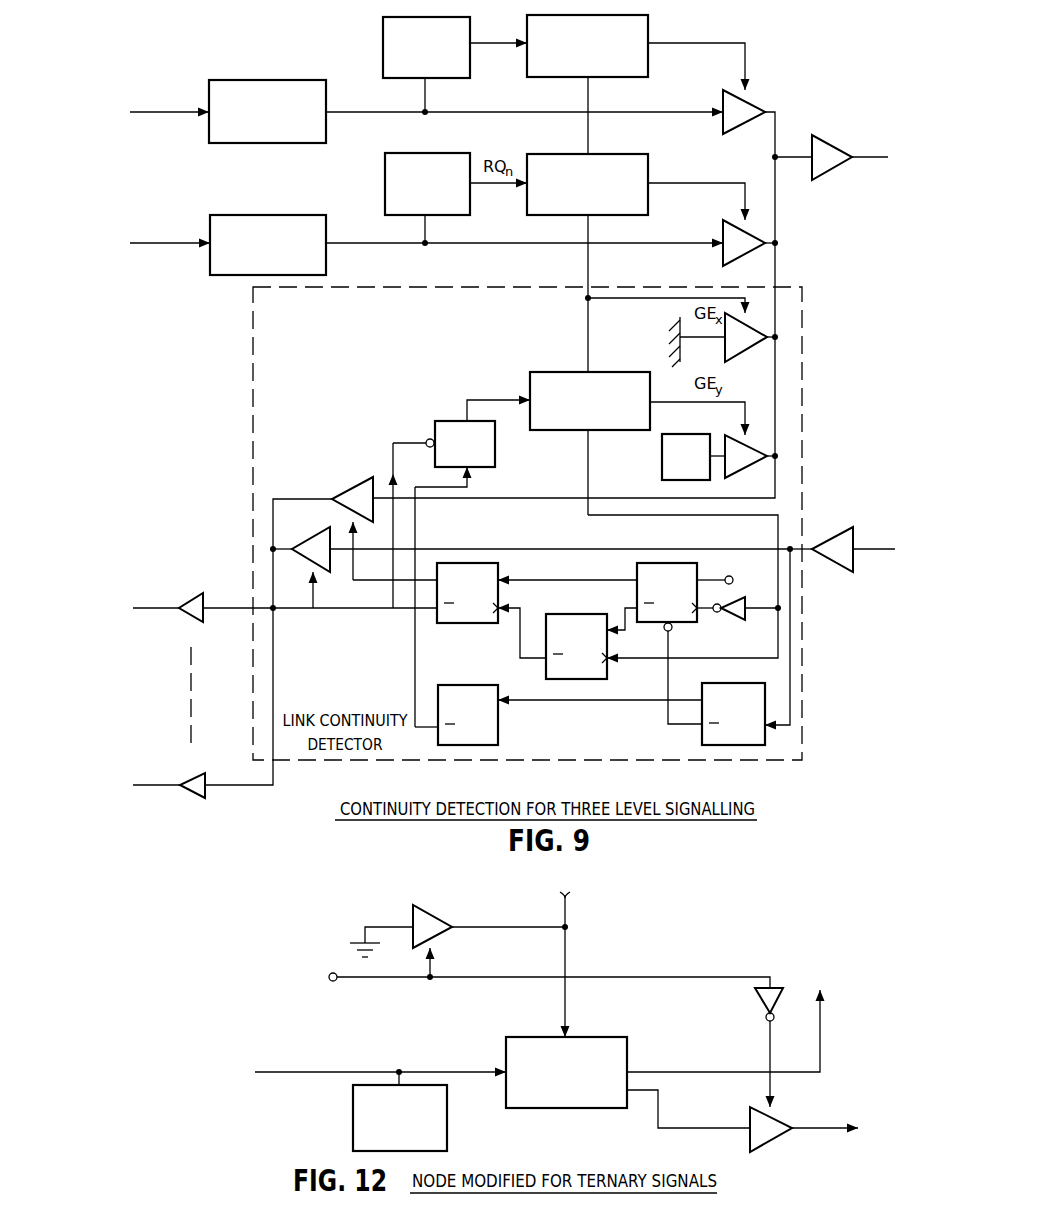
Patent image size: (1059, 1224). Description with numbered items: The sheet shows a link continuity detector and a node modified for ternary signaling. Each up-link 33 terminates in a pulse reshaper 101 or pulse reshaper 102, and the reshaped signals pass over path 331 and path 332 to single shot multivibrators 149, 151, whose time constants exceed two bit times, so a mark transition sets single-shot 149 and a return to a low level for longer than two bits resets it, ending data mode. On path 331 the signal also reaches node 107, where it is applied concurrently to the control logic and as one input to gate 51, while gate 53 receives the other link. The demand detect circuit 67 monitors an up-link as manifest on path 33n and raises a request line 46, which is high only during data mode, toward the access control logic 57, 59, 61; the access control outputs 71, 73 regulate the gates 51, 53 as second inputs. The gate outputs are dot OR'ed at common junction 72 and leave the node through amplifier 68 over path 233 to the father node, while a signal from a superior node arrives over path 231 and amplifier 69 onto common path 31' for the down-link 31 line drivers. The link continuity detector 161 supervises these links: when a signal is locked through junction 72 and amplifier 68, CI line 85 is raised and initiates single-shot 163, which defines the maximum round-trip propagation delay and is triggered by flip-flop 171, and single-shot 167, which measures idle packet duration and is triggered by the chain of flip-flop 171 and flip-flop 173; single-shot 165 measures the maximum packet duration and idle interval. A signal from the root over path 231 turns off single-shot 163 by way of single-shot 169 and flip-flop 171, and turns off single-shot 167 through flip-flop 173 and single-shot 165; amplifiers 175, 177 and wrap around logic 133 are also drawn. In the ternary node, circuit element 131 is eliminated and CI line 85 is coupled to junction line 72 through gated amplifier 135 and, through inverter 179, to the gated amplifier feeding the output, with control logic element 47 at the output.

In FIG. 9, the down-link 31 is at (285, 689).
In FIG. 9, the common path 31' is at (560, 533).
In FIG. 12, the common path 31' is at (741, 1031).
In FIG. 9, the up-link 33 is at (179, 108).
In FIG. 12, the path 33n is at (430, 1072).
In FIG. 9, the request line RQ 46 is at (484, 45).
In FIG. 12, the control logic element 47 is at (771, 1146).
In FIG. 9, the gate 51 is at (748, 130).
In FIG. 9, the gate 53 is at (746, 262).
In FIG. 9, the access control logic 57 is at (604, 78).
In FIG. 9, the access control logic 59 is at (604, 216).
In FIG. 9, the access control logic 61 is at (603, 431).
In FIG. 12, the demand detect circuit 67 is at (353, 1118).
In FIG. 9, the amplifier 68 is at (826, 142).
In FIG. 9, the amplifier 69 is at (826, 546).
In FIG. 9, the access control output 71 is at (745, 68).
In FIG. 9, the common junction 72 is at (777, 160).
In FIG. 12, the common junction 72 is at (566, 906).
In FIG. 9, the access control output 73 is at (745, 198).
In FIG. 9, the CI line 85 is at (588, 128).
In FIG. 12, the CI line 85 is at (539, 974).
In FIG. 9, the pulse reshaper 101 is at (272, 80).
In FIG. 9, the pulse reshaper 102 is at (272, 215).
In FIG. 9, the node 107 is at (428, 112).
In FIG. 9, the circuit element 131 is at (701, 434).
In FIG. 12, the wrap around logic 133 is at (583, 1037).
In FIG. 9, the gated amplifier 135 is at (758, 470).
In FIG. 12, the gated amplifier 135 is at (438, 919).
In FIG. 9, the single shot multivibrator 149 is at (383, 34).
In FIG. 9, the single shot multivibrator 151 is at (385, 180).
In FIG. 9, the link continuity detector 161 is at (253, 373).
In FIG. 9, the single-shot 163 is at (606, 679).
In FIG. 9, the single-shot 165 is at (498, 733).
In FIG. 9, the single-shot 167 is at (446, 421).
In FIG. 9, the single-shot 169 is at (702, 741).
In FIG. 9, the flip-flop 171 is at (637, 571).
In FIG. 9, the flip-flop 173 is at (503, 572).
In FIG. 9, the amplifier 175 is at (353, 486).
In FIG. 9, the amplifier 177 is at (311, 536).
In FIG. 12, the inverter 179 is at (755, 996).
In FIG. 9, the path 231 is at (876, 532).
In FIG. 12, the path 231 is at (380, 1060).
In FIG. 9, the path 233 is at (868, 141).
In FIG. 12, the path 233 is at (808, 1129).
In FIG. 9, the path 331 is at (524, 103).
In FIG. 9, the path 332 is at (524, 234).